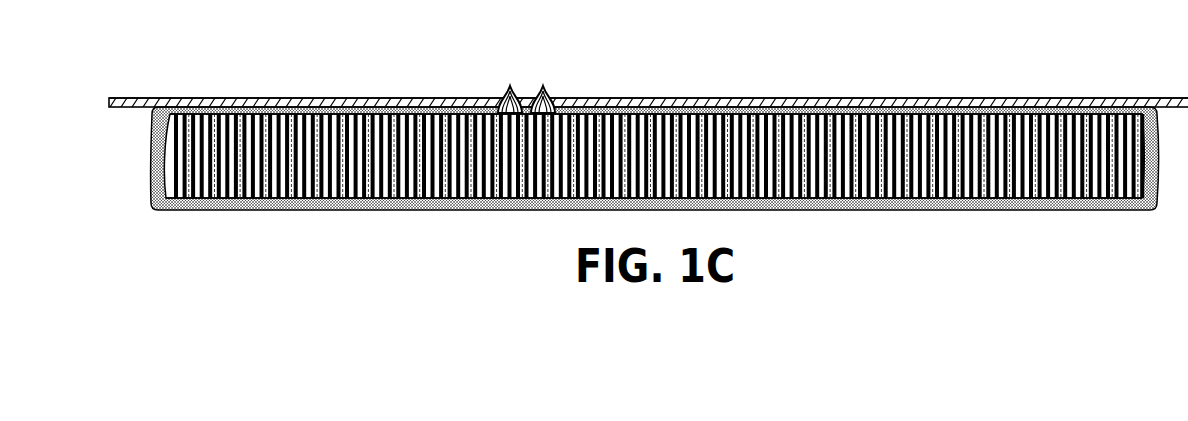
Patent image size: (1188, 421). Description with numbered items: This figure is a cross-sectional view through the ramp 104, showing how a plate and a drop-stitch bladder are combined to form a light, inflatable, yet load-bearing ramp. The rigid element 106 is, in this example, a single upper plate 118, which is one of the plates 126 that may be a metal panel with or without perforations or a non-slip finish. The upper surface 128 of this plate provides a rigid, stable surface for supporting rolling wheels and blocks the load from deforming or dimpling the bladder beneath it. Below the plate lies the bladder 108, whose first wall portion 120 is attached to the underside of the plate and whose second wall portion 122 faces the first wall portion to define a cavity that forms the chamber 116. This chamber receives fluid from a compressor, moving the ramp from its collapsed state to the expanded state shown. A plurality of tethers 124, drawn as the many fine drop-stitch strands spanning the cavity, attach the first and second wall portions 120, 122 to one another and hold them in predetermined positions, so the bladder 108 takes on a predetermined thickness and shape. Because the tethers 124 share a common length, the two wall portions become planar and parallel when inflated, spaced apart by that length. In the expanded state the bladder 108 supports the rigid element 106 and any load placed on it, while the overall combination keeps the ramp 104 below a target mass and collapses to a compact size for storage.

The ramp 104 is at (68, 16).
The rigid element 106 is at (197, 75).
The upper plate 118 is at (377, 102).
The plate 126 is at (918, 102).
The surface 128 is at (408, 97).
The bladder 108 is at (158, 200).
The first wall portion 120 is at (335, 108).
The second wall portion 122 is at (403, 209).
The chamber 116 is at (333, 209).
The tethers 124 is at (510, 87).